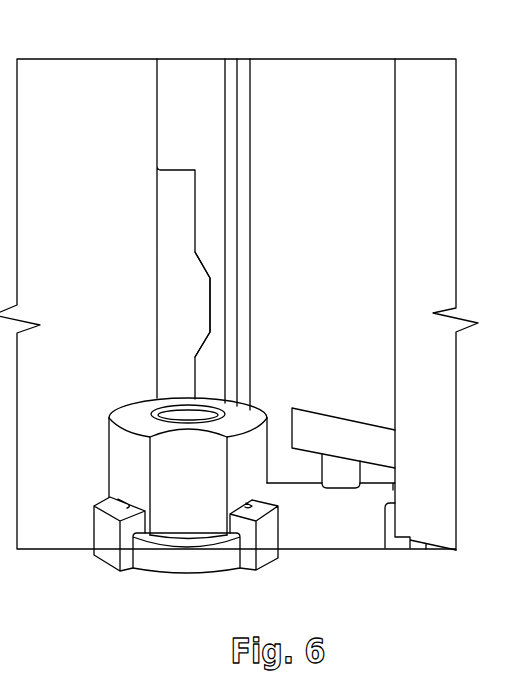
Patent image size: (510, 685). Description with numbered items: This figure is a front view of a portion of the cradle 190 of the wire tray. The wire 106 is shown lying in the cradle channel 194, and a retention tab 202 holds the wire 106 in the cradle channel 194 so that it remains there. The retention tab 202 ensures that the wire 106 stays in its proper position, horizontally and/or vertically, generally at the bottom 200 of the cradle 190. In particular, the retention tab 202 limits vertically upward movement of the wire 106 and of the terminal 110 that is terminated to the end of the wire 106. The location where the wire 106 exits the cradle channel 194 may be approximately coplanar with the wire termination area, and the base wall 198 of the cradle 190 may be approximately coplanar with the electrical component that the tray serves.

The wire 106 is at (213, 210).
The terminal 110 is at (90, 562).
The cradle 190 is at (319, 86).
The cradle channel 194 is at (236, 80).
The base wall 198 is at (314, 486).
The bottom 200 is at (316, 486).
The retention tab 202 is at (207, 288).